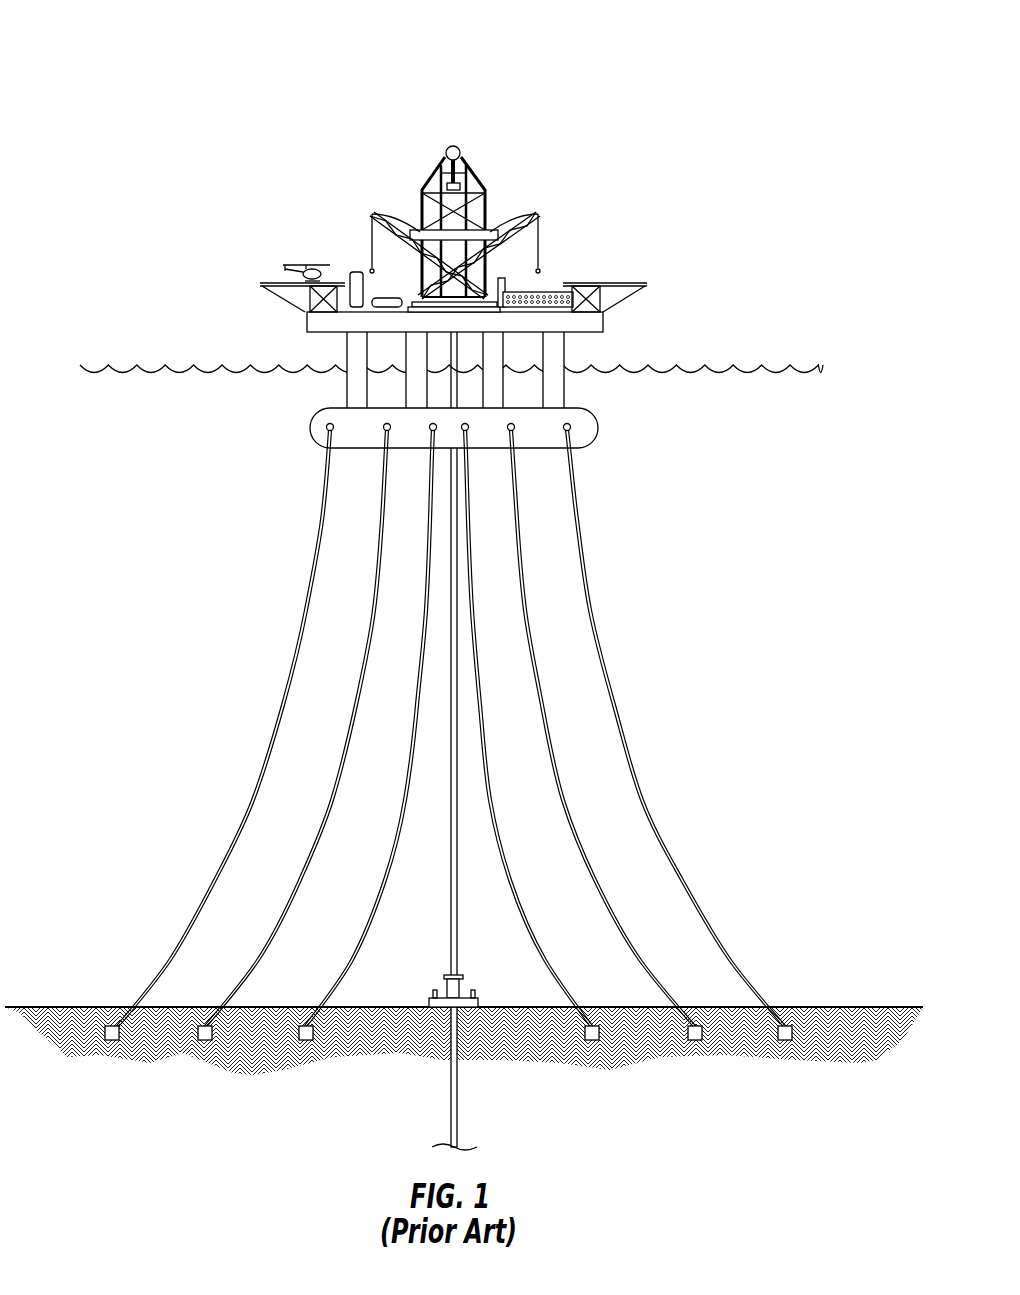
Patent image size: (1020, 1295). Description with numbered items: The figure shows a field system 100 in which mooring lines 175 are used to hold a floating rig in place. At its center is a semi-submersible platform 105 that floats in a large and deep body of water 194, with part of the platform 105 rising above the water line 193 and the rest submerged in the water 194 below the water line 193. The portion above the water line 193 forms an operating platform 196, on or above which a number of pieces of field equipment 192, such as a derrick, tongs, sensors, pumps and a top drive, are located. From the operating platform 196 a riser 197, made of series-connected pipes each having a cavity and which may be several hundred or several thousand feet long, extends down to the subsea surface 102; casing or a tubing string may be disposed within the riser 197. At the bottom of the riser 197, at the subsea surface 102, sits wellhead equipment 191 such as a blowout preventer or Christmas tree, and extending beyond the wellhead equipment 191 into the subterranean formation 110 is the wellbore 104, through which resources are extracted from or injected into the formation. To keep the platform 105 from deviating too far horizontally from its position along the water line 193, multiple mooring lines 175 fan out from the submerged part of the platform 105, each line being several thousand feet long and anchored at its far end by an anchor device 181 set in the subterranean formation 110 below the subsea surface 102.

The field system 100 is at (464, 575).
The subsea surface 102 is at (853, 1007).
The wellbore 104 is at (458, 1097).
The semi-submersible platform 105 is at (456, 288).
The subterranean formation 110 is at (257, 1070).
The mooring lines 175 is at (685, 699).
The anchor device 181 is at (693, 1040).
The wellhead equipment 191 is at (431, 971).
The field equipment 192 is at (290, 200).
The water line 193 is at (777, 368).
The body of water 194 is at (773, 568).
The operating platform 196 is at (600, 323).
The riser 197 is at (458, 942).